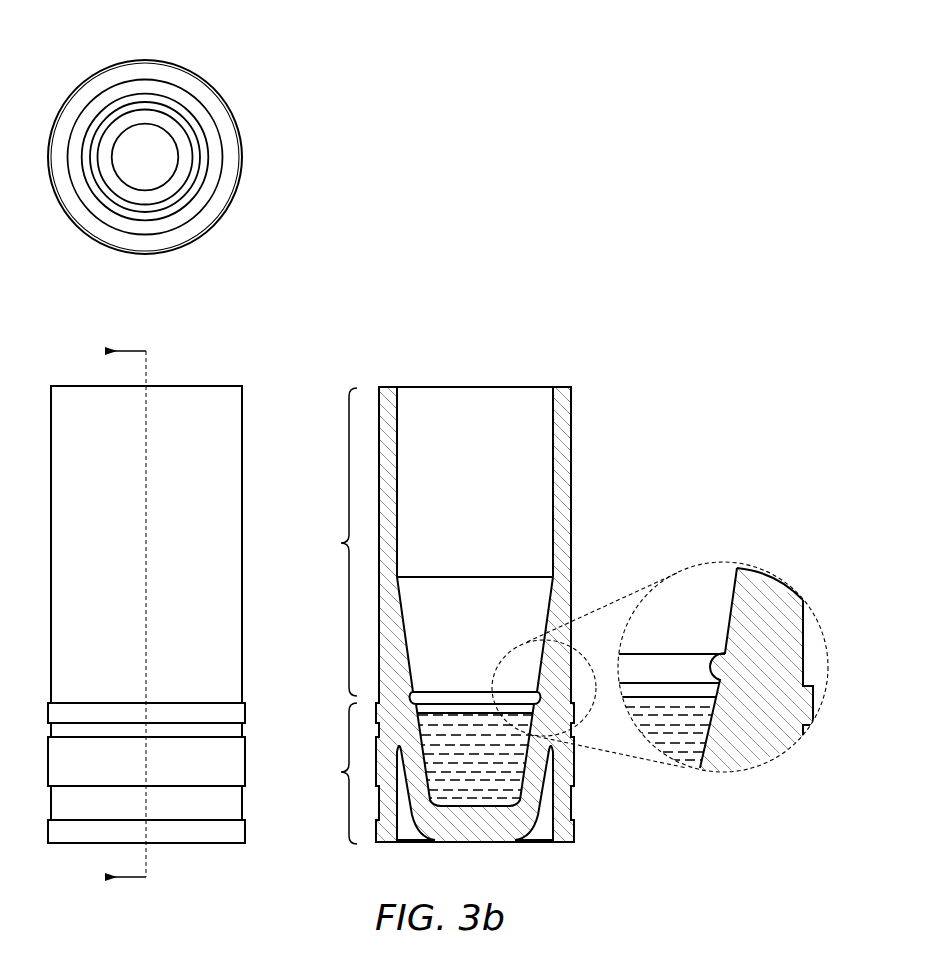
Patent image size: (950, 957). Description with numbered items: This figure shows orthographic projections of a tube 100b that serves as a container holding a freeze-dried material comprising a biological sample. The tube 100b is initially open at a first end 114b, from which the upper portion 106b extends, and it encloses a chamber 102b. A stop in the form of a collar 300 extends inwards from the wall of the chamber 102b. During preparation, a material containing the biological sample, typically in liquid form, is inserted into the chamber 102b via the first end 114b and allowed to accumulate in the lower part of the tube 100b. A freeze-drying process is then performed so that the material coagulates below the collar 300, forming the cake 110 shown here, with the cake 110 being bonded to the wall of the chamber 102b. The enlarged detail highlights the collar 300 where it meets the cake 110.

The tube 100b is at (193, 69).
The chamber 102b is at (505, 431).
The first end 114b is at (421, 386).
The upper portion 106b is at (325, 616).
The cake 110 is at (503, 768).
The collar 300 is at (723, 668).